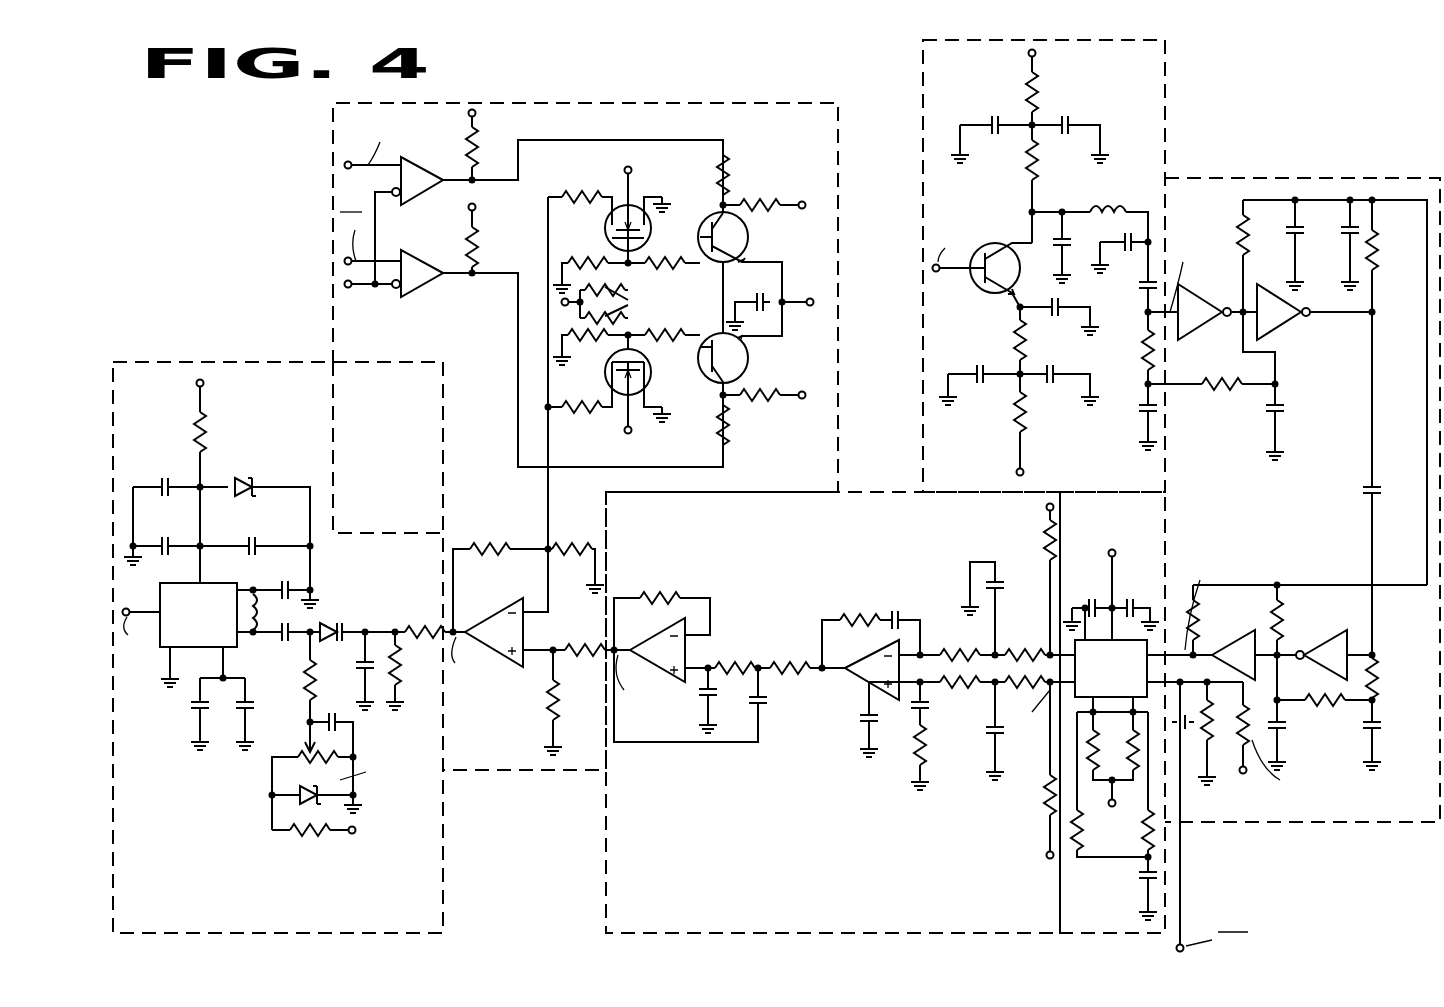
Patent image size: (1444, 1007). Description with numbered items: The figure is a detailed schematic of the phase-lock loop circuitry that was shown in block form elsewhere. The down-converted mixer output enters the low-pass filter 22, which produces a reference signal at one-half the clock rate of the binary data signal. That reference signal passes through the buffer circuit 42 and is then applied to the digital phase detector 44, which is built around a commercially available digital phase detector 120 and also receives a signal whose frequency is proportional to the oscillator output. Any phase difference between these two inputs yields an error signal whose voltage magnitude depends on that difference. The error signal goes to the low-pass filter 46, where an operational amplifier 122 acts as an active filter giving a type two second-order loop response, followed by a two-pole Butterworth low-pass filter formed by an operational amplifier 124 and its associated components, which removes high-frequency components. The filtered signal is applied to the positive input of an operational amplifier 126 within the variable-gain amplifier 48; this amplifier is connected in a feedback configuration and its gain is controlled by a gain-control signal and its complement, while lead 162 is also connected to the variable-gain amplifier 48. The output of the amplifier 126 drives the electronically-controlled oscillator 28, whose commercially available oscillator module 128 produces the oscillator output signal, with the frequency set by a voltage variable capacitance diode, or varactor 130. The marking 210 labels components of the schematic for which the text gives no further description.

The low-pass filter 22 is at (1044, 266).
The electronically-controlled oscillator 28 is at (283, 647).
The buffer circuit 42 is at (1293, 565).
The digital phase detector 44 is at (1128, 712).
The low-pass filter 46 is at (840, 712).
The variable-gain amplifier 48 is at (585, 436).
The digital phase detector 120 is at (1152, 645).
The operational amplifier 122 is at (868, 648).
The operational amplifier 124 is at (658, 645).
The operational amplifier 126 is at (492, 622).
The oscillator module 128 is at (213, 583).
The varactor 130 is at (328, 620).
The lead 162 is at (352, 288).
The tuning inductor and capacitor 210 is at (1100, 237).